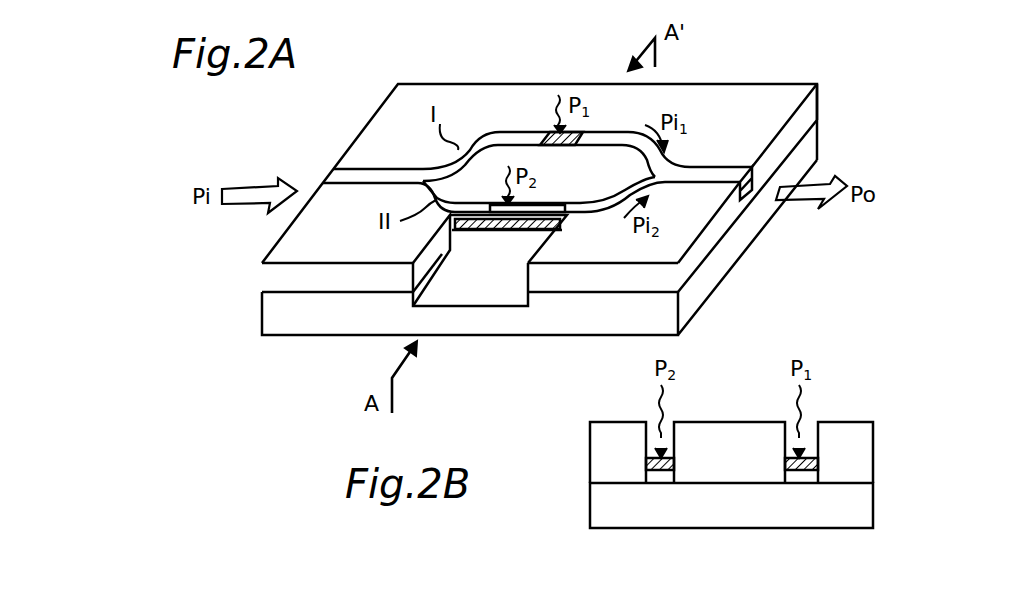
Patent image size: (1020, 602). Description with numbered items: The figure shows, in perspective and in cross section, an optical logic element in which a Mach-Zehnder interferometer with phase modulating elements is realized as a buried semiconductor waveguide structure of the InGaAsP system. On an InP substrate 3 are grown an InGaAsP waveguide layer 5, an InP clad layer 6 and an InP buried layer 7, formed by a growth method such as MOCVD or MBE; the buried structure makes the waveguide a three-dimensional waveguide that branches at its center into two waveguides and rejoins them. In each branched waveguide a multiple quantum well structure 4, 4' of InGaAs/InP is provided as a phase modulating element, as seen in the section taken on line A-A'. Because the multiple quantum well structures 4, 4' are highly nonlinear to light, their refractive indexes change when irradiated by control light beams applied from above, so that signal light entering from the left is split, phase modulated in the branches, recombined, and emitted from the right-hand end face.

In FIG. 2A, the InP substrate 3 is at (553, 325).
In FIG. 2B, the InP substrate 3 is at (597, 505).
In FIG. 2A, the InP buried layer 7 is at (372, 280).
In FIG. 2B, the InP buried layer 7 is at (597, 455).
In FIG. 2A, the multiple quantum well structure 4 is at (545, 119).
In FIG. 2B, the multiple quantum well structure 4 is at (801, 514).
In FIG. 2A, the multiple quantum well structure 4' is at (507, 302).
In FIG. 2B, the multiple quantum well structure 4' is at (660, 514).
In FIG. 2A, the InGaAsP waveguide layer 5 is at (463, 232).
In FIG. 2A, the InP clad layer 6 is at (548, 224).
In FIG. 2B, the InP clad layer 6 is at (652, 428).